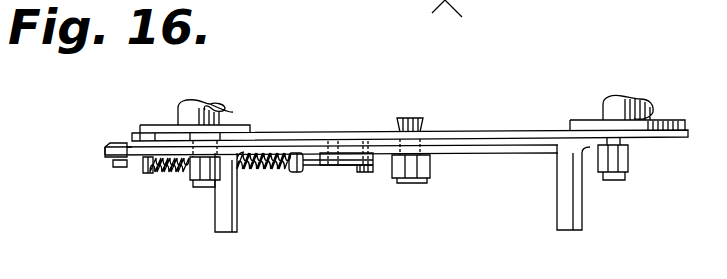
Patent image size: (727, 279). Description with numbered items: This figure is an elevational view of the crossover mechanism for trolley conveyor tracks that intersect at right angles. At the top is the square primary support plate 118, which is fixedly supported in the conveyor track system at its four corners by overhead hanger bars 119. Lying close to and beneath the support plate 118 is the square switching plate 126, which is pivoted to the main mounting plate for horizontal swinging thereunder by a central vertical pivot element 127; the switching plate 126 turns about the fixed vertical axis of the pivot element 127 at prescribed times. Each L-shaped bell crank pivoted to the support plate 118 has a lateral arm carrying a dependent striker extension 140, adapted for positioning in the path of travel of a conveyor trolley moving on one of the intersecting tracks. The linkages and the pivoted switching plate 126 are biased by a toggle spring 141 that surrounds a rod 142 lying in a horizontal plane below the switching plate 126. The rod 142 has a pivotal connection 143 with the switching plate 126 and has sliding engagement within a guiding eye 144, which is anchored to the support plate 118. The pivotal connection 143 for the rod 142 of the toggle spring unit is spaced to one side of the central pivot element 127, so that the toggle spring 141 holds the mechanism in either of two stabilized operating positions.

The primary support plate 118 is at (511, 132).
The overhead hanger bars 119 is at (224, 112).
The switching plate 126 is at (477, 141).
The central vertical pivot element 127 is at (422, 180).
The striker extension 140 is at (225, 226).
The toggle spring 141 is at (275, 174).
The rod 142 is at (313, 170).
The pivotal connection 143 is at (365, 170).
The guiding eye 144 is at (147, 176).